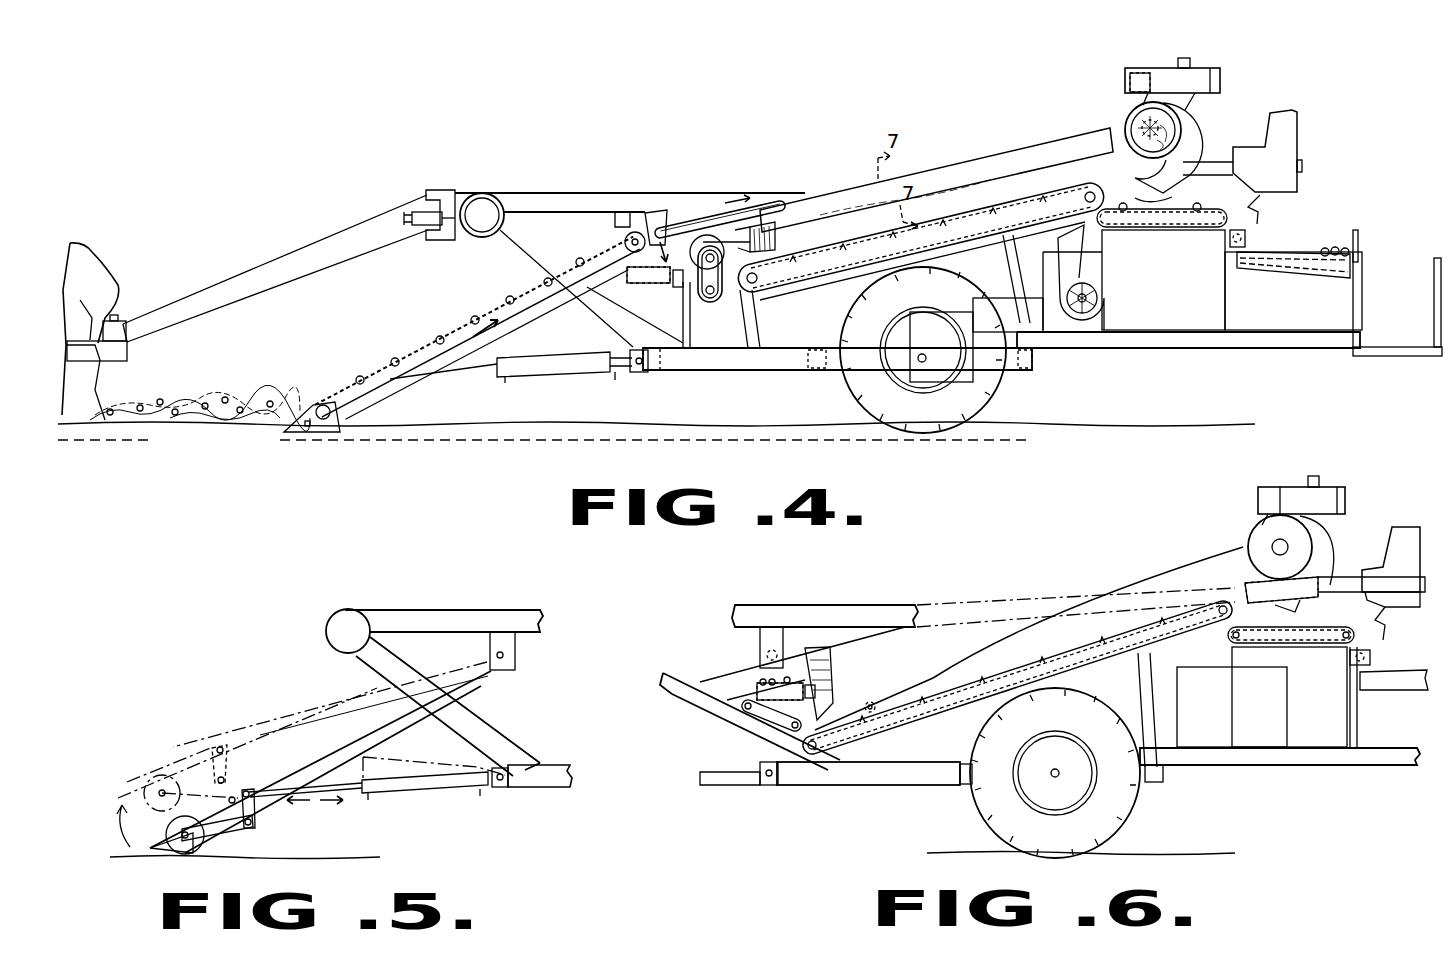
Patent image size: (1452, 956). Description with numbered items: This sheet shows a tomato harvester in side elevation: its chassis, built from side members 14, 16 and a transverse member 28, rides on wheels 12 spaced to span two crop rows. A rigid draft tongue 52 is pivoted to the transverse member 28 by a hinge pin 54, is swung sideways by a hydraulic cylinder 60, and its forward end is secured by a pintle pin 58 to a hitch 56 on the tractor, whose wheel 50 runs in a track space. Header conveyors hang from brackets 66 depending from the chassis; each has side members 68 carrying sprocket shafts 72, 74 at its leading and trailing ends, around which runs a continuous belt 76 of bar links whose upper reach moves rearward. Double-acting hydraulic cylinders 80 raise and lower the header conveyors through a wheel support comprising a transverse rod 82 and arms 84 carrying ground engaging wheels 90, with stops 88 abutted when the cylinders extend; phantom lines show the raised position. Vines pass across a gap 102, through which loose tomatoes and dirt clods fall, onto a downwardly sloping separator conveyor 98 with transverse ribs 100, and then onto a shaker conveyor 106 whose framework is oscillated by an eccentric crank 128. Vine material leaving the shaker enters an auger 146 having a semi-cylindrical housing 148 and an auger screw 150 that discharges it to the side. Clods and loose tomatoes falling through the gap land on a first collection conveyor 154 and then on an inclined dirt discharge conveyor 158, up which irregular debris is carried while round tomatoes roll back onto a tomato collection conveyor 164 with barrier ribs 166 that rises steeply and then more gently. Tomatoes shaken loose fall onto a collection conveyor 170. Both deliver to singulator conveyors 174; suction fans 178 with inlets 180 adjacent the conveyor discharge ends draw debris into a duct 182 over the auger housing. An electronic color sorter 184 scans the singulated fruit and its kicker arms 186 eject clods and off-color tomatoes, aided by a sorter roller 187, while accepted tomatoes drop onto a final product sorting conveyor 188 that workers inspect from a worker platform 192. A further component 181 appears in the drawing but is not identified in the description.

In FIG. 4, the wheels 12 is at (992, 404).
In FIG. 6, the wheels 12 is at (1118, 828).
In FIG. 4, the side member 14 is at (545, 192).
In FIG. 5, the side member 14 is at (438, 610).
In FIG. 5, the side member 16 is at (478, 730).
In FIG. 4, the transverse member 28 is at (483, 193).
In FIG. 5, the transverse member 28 is at (332, 629).
In FIG. 4, the tractor wheel 50 is at (85, 247).
In FIG. 4, the draft tongue 52 is at (273, 262).
In FIG. 4, the hinge pin 54 is at (443, 190).
In FIG. 4, the hitch 56 is at (128, 351).
In FIG. 4, the pintle pin 58 is at (113, 320).
In FIG. 4, the hydraulic cylinder 60 is at (415, 240).
In FIG. 4, the bracket 66 is at (630, 220).
In FIG. 5, the bracket 66 is at (516, 643).
In FIG. 5, the side member 68 is at (447, 680).
In FIG. 4, the sprocket shaft 72 is at (323, 398).
In FIG. 4, the sprocket shaft 74 is at (638, 232).
In FIG. 4, the belt 76 is at (453, 323).
In FIG. 4, the hydraulic cylinder 80 is at (548, 366).
In FIG. 5, the hydraulic cylinder 80 is at (393, 792).
In FIG. 5, the rod 82 is at (255, 822).
In FIG. 5, the arm 84 is at (225, 835).
In FIG. 5, the stop 88 is at (226, 797).
In FIG. 5, the ground engaging wheel 90 is at (190, 857).
In FIG. 4, the separator conveyor 98 is at (763, 197).
In FIG. 4, the rib 100 is at (700, 215).
In FIG. 4, the gap 102 is at (663, 225).
In FIG. 4, the shaker conveyor 106 is at (926, 183).
In FIG. 4, the eccentric crank 128 is at (693, 268).
In FIG. 4, the auger 146 is at (1120, 102).
In FIG. 4, the auger housing 148 is at (1180, 135).
In FIG. 4, the auger screw 150 is at (1125, 128).
In FIG. 4, the first collection conveyor 154 is at (646, 284).
In FIG. 6, the first collection conveyor 154 is at (795, 683).
In FIG. 6, the dirt discharge conveyor 158 is at (757, 720).
In FIG. 6, the tomato collection conveyor 164 is at (900, 718).
In FIG. 6, the barrier rib 166 is at (870, 702).
In FIG. 4, the collection conveyor 170 is at (950, 245).
In FIG. 4, the singulator conveyor 174 is at (1163, 229).
In FIG. 6, the singulator conveyor 174 is at (1312, 627).
In FIG. 4, the suction fan 178 is at (1218, 72).
In FIG. 6, the suction fan 178 is at (1345, 492).
In FIG. 4, the inlet 180 is at (1173, 196).
In FIG. 4, the fan 181 is at (1095, 292).
In FIG. 4, the duct 182 is at (1137, 70).
In FIG. 4, the electronic color sorter 184 is at (1290, 120).
In FIG. 6, the electronic color sorter 184 is at (1410, 527).
In FIG. 4, the kicker arm 186 is at (1262, 215).
In FIG. 6, the kicker arm 186 is at (1387, 630).
In FIG. 4, the sorter roller 187 is at (1247, 240).
In FIG. 6, the sorter roller 187 is at (1350, 658).
In FIG. 4, the final product sorting conveyor 188 is at (1315, 250).
In FIG. 6, the final product sorting conveyor 188 is at (1387, 690).
In FIG. 4, the worker platform 192 is at (1390, 345).